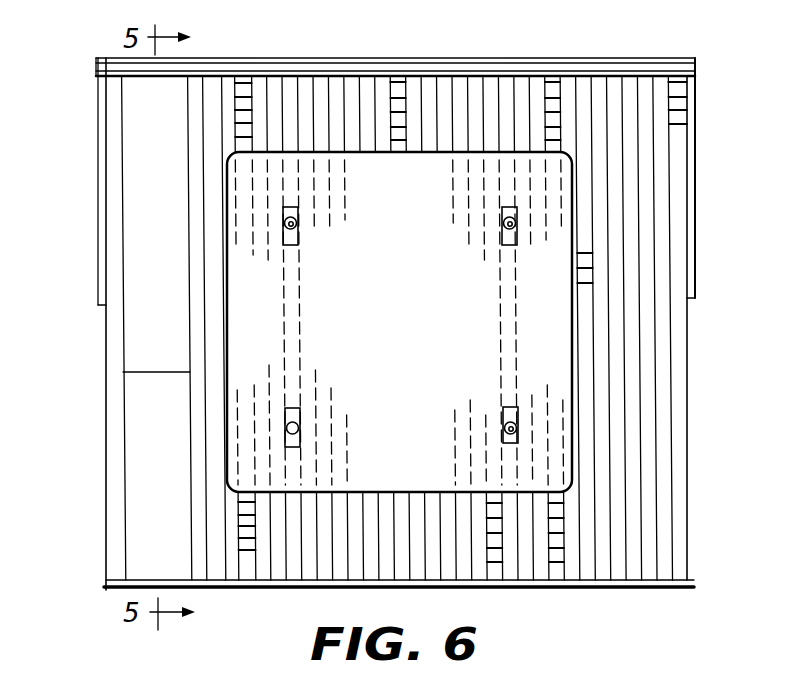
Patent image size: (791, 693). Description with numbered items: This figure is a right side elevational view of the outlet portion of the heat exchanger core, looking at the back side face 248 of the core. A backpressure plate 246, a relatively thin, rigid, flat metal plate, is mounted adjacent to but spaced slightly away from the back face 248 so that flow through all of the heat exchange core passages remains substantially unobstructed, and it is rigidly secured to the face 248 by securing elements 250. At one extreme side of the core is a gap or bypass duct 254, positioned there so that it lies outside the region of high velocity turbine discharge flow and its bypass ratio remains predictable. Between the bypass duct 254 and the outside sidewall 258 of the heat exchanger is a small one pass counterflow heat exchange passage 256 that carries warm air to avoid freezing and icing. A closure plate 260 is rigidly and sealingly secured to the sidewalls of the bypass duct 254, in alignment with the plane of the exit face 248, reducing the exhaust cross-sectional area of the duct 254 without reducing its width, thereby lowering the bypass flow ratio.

The backpressure plate 246 is at (433, 321).
The back side face 248 is at (615, 96).
The securing elements 250 is at (297, 226).
The bypass duct 254 is at (146, 427).
The one pass counterflow heat exchange passage 256 is at (112, 344).
The outside sidewall 258 is at (102, 307).
The closure plate 260 is at (130, 194).